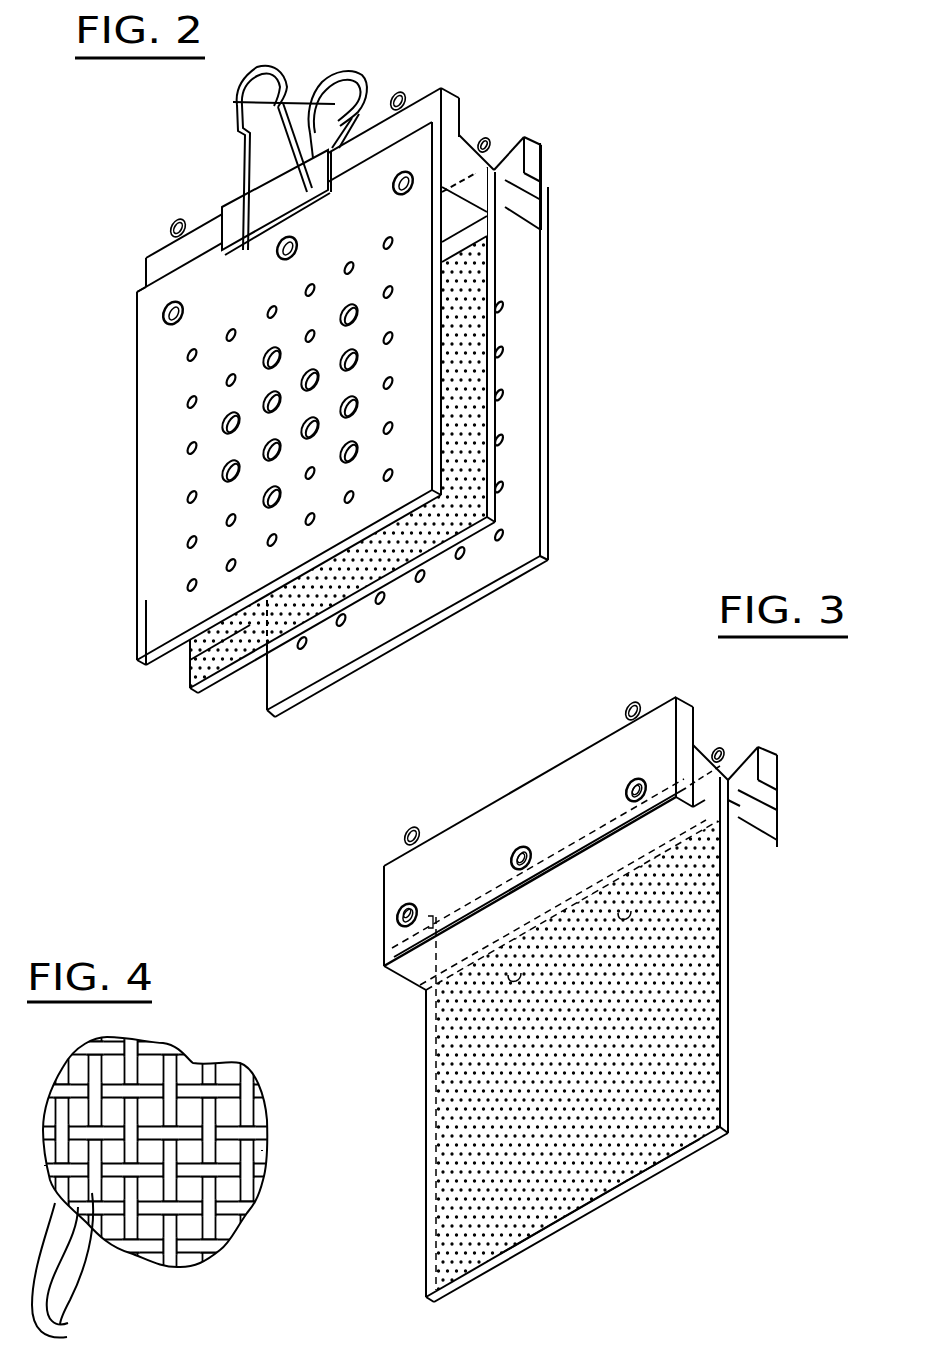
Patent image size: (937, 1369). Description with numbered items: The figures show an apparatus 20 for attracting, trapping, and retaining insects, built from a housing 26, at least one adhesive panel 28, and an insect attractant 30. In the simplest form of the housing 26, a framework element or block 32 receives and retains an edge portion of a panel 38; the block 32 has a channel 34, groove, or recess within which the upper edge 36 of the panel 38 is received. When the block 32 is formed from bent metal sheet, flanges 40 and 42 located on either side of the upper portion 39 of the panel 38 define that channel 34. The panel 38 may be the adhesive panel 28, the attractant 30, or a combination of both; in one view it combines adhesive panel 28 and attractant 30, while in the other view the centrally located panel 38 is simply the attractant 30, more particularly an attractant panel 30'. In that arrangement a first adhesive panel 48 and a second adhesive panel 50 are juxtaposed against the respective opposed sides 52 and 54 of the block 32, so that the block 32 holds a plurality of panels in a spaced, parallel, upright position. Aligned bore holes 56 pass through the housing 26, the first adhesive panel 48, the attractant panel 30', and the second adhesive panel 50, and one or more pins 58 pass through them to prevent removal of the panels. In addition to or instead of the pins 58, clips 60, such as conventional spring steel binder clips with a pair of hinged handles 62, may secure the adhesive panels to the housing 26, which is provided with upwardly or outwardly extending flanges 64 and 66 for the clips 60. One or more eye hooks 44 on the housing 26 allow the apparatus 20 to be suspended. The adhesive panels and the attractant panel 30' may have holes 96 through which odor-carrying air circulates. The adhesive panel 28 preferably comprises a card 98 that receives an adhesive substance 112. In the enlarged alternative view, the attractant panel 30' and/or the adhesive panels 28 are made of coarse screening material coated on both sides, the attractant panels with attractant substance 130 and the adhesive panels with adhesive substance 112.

In FIG. 2, the apparatus 20 is at (640, 293).
In FIG. 3, the apparatus 20 is at (770, 978).
In FIG. 2, the housing 26 is at (560, 166).
In FIG. 3, the housing 26 is at (772, 853).
In FIG. 2, the adhesive panel 28 is at (528, 478).
In FIG. 3, the adhesive panel 28 is at (723, 1127).
In FIG. 4, the adhesive panel 28 is at (246, 1236).
In FIG. 2, the insect attractant 30 is at (342, 468).
In FIG. 3, the insect attractant 30 is at (660, 1169).
In FIG. 2, the attractant panel 30' is at (534, 390).
In FIG. 3, the attractant panel 30' is at (607, 1058).
In FIG. 4, the attractant panel 30' is at (114, 1243).
In FIG. 2, the block 32 is at (508, 152).
In FIG. 3, the block 32 is at (762, 793).
In FIG. 2, the channel 34 is at (527, 222).
In FIG. 3, the channel 34 is at (735, 798).
In FIG. 2, the upper edge 36 is at (468, 143).
In FIG. 3, the upper edge 36 is at (706, 740).
In FIG. 2, the panel 38 is at (312, 618).
In FIG. 3, the panel 38 is at (540, 1226).
In FIG. 2, the upper portion 39 is at (492, 248).
In FIG. 3, the upper portion 39 is at (690, 863).
In FIG. 2, the flange 40 is at (462, 178).
In FIG. 3, the flange 40 is at (692, 780).
In FIG. 2, the flange 42 is at (530, 240).
In FIG. 3, the flange 42 is at (768, 823).
In FIG. 2, the eye hook 44 is at (170, 225).
In FIG. 3, the eye hook 44 is at (404, 838).
In FIG. 2, the first adhesive panel 48 is at (148, 518).
In FIG. 2, the second adhesive panel 50 is at (526, 537).
In FIG. 2, the side 52 is at (145, 268).
In FIG. 3, the side 52 is at (380, 875).
In FIG. 2, the side 54 is at (543, 158).
In FIG. 3, the side 54 is at (779, 766).
In FIG. 2, the bore hole 56 is at (192, 318).
In FIG. 3, the bore hole 56 is at (513, 862).
In FIG. 2, the pin 58 is at (163, 313).
In FIG. 3, the pin 58 is at (398, 913).
In FIG. 2, the clip 60 is at (253, 200).
In FIG. 2, the hinged handle 62 is at (338, 75).
In FIG. 2, the flange 64 is at (463, 97).
In FIG. 3, the flange 64 is at (677, 695).
In FIG. 2, the flange 66 is at (545, 143).
In FIG. 3, the flange 66 is at (775, 748).
In FIG. 2, the hole 96 is at (503, 393).
In FIG. 4, the hole 96 is at (185, 1080).
In FIG. 2, the card 98 is at (444, 596).
In FIG. 2, the adhesive substance 112 is at (140, 613).
In FIG. 4, the adhesive substance 112 is at (152, 1274).
In FIG. 2, the attractant substance 130 is at (473, 452).
In FIG. 3, the attractant substance 130 is at (608, 1203).
In FIG. 4, the attractant substance 130 is at (55, 1330).